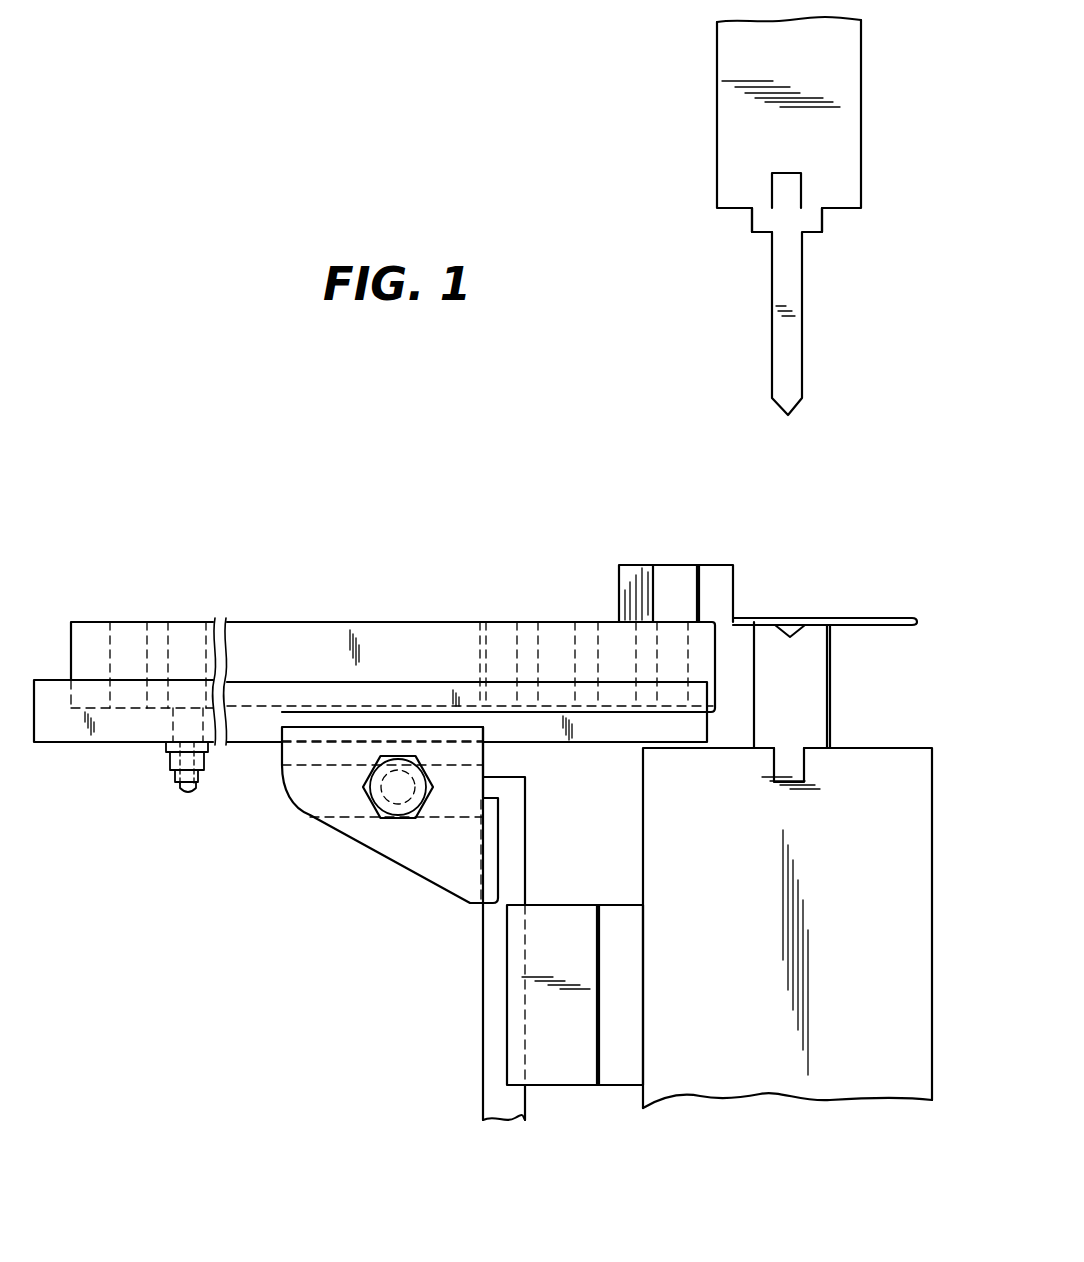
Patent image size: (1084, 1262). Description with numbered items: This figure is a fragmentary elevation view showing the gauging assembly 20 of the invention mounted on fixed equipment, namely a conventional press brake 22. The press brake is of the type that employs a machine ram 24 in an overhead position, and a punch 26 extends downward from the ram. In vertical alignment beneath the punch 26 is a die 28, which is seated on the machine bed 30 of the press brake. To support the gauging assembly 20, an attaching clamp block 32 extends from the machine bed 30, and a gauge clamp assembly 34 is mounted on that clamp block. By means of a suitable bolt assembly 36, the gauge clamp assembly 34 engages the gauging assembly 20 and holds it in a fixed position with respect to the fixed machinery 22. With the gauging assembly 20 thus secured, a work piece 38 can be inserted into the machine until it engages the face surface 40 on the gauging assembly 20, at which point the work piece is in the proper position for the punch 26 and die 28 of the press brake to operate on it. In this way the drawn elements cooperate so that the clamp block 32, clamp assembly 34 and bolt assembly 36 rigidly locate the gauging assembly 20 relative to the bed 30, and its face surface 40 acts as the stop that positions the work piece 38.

The gauging assembly 20 is at (213, 593).
The press brake 22 is at (733, 1117).
The machine ram 24 is at (745, 130).
The punch 26 is at (783, 366).
The die 28 is at (823, 717).
The machine bed 30 is at (840, 1078).
The attaching clamp block 32 is at (556, 1073).
The gauge clamp assembly 34 is at (490, 940).
The bolt assembly 36 is at (398, 790).
The work piece 38 is at (917, 628).
The face surface 40 is at (728, 594).